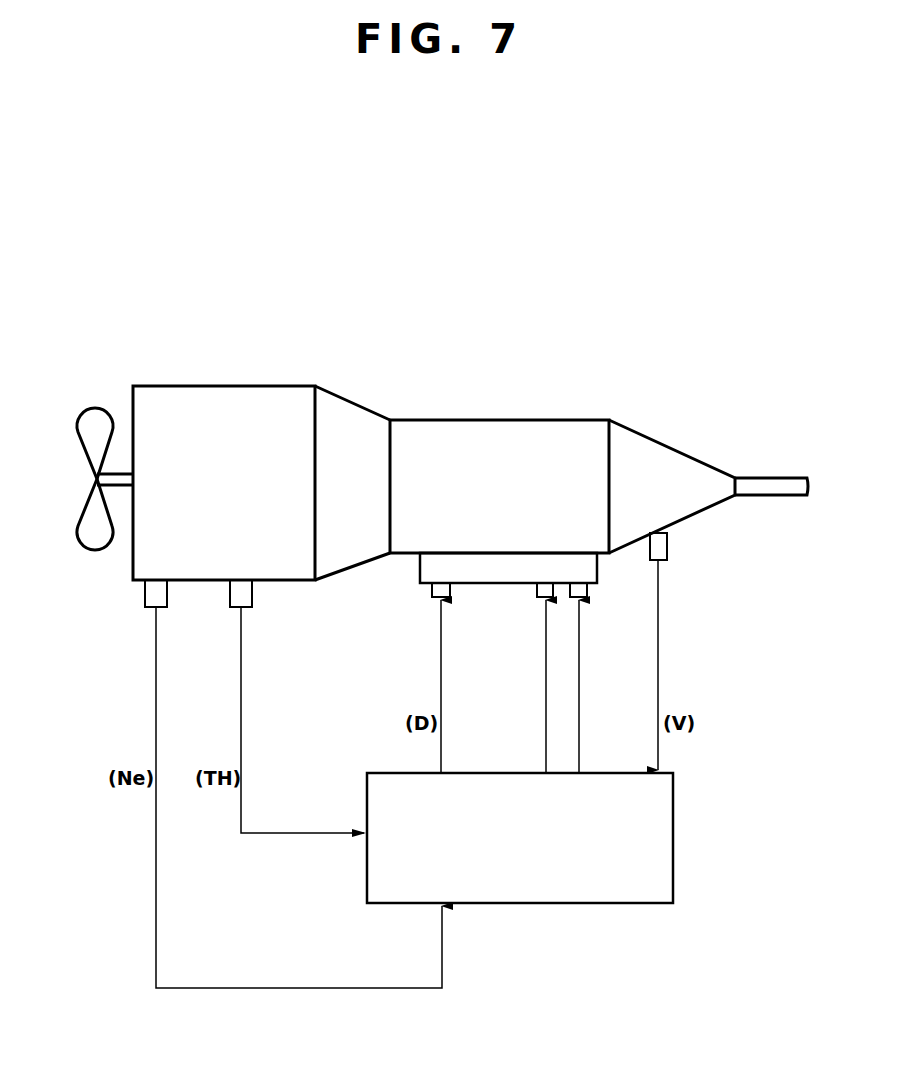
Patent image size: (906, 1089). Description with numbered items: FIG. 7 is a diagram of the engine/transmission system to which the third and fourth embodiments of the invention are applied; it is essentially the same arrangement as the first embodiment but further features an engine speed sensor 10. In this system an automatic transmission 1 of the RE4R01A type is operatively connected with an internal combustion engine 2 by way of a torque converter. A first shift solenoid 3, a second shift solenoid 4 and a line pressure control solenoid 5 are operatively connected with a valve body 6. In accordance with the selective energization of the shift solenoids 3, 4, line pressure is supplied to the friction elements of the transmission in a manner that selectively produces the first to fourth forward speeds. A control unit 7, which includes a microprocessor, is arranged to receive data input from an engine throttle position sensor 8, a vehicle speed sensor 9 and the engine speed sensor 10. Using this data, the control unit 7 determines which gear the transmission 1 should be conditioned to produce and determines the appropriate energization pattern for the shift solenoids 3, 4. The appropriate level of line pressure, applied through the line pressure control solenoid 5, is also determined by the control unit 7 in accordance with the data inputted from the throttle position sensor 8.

The automatic transmission 1 is at (504, 418).
The internal combustion engine 2 is at (203, 386).
The first shift solenoid 3 is at (537, 590).
The second shift solenoid 4 is at (588, 592).
The line pressure control solenoid 5 is at (430, 592).
The valve body 6 is at (597, 575).
The control unit 7 is at (673, 853).
The engine throttle position sensor 8 is at (252, 597).
The vehicle speed sensor 9 is at (668, 548).
The engine speed sensor 10 is at (145, 597).